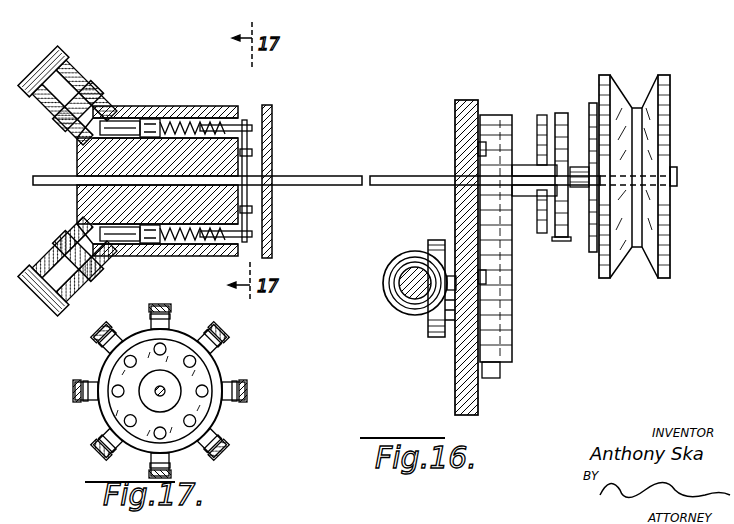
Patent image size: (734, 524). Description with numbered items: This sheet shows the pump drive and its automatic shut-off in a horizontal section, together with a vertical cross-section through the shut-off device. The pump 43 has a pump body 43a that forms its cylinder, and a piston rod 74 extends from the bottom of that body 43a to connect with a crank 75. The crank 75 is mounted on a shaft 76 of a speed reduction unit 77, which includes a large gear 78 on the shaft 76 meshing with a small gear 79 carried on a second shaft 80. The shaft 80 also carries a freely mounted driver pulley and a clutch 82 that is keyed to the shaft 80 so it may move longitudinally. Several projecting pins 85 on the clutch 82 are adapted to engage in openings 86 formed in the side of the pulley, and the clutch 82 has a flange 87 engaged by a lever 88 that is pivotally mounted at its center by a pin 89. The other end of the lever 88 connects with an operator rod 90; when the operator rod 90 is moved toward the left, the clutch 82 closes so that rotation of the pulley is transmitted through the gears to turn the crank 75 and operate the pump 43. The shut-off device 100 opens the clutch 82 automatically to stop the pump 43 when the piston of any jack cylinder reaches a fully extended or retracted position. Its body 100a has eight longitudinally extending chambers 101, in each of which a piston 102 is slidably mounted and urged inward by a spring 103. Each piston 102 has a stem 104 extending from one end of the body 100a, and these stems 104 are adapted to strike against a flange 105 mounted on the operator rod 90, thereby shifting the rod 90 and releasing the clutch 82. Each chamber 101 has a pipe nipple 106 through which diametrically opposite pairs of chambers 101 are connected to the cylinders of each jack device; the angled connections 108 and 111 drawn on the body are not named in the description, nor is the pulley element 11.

In FIG. 16, the pulley 11 is at (668, 100).
In FIG. 16, the pump 43 is at (384, 281).
In FIG. 16, the pump body 43a is at (396, 284).
In FIG. 16, the piston rod 74 is at (405, 292).
In FIG. 16, the crank 75 is at (432, 330).
In FIG. 16, the shaft 76 is at (448, 326).
In FIG. 16, the speed reduction unit 77 is at (500, 370).
In FIG. 16, the large gear 78 is at (505, 336).
In FIG. 16, the small gear 79 is at (490, 150).
In FIG. 16, the shaft 80 is at (678, 179).
In FIG. 16, the clutch 82 is at (561, 112).
In FIG. 16, the projecting pins 85 is at (584, 166).
In FIG. 16, the openings 86 is at (633, 106).
In FIG. 16, the flange 87 is at (561, 243).
In FIG. 16, the lever 88 is at (532, 182).
In FIG. 16, the pin 89 is at (542, 202).
In FIG. 16, the operator rod 90 is at (56, 176).
In FIG. 17, the operator rod 90 is at (164, 390).
In FIG. 16, the shut-off device 100 is at (78, 150).
In FIG. 17, the shut-off device 100 is at (219, 404).
In FIG. 16, the body 100a is at (88, 192).
In FIG. 17, the body 100a is at (210, 420).
In FIG. 16, the chambers 101 is at (118, 126).
In FIG. 16, the piston 102 is at (152, 126).
In FIG. 16, the spring 103 is at (196, 124).
In FIG. 16, the stem 104 is at (250, 126).
In FIG. 17, the stem 104 is at (186, 358).
In FIG. 16, the flange 105 is at (274, 130).
In FIG. 16, the pipe nipple 106 is at (86, 88).
In FIG. 17, the pipe nipple 106 is at (96, 345).
In FIG. 16, the upper nozzle 108 is at (72, 80).
In FIG. 16, the lower nozzle 111 is at (70, 290).